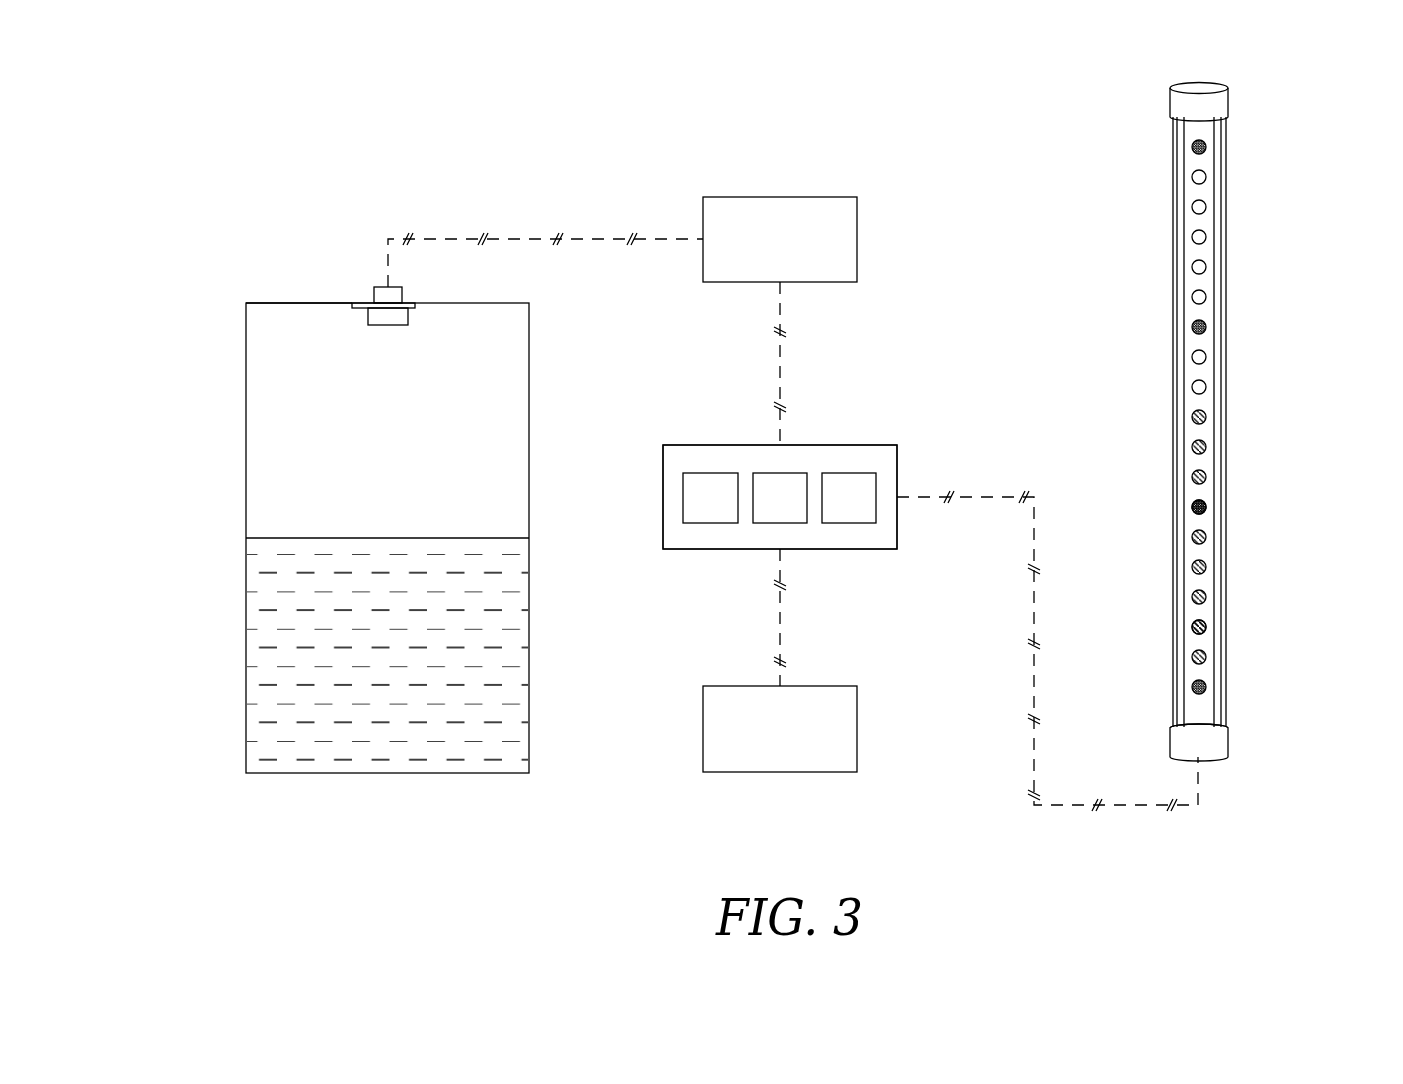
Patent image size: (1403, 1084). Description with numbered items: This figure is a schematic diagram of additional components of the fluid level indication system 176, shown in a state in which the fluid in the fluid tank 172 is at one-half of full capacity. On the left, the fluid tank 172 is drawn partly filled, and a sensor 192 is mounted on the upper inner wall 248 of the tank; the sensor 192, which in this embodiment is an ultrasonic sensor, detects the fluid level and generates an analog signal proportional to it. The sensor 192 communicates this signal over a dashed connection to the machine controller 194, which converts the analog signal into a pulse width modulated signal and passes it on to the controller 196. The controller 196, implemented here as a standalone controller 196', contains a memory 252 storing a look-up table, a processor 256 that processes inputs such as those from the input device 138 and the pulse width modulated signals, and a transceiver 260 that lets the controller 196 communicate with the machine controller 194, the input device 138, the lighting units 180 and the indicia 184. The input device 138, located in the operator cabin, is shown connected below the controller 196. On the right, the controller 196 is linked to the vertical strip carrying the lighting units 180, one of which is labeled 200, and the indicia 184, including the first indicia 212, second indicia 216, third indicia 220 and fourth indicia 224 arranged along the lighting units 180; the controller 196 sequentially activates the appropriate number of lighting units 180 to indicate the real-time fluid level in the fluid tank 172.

The input device 138 is at (857, 709).
The fluid tank 172 is at (246, 443).
The system 176 is at (1285, 123).
The lighting units 180 is at (1204, 622).
The indicia 184 is at (1204, 502).
The sensor 192 is at (368, 337).
The machine controller 194 is at (857, 221).
The controller 196 is at (780, 444).
The standalone controller 196' is at (797, 456).
The light source 200 is at (1206, 628).
The first indicia 212 is at (1206, 688).
The second indicia 216 is at (1206, 510).
The third indicia 220 is at (1206, 325).
The fourth indicia 224 is at (1206, 144).
The upper inner wall 248 is at (283, 303).
The memory 252 is at (705, 523).
The processor 256 is at (772, 523).
The transceiver 260 is at (855, 523).